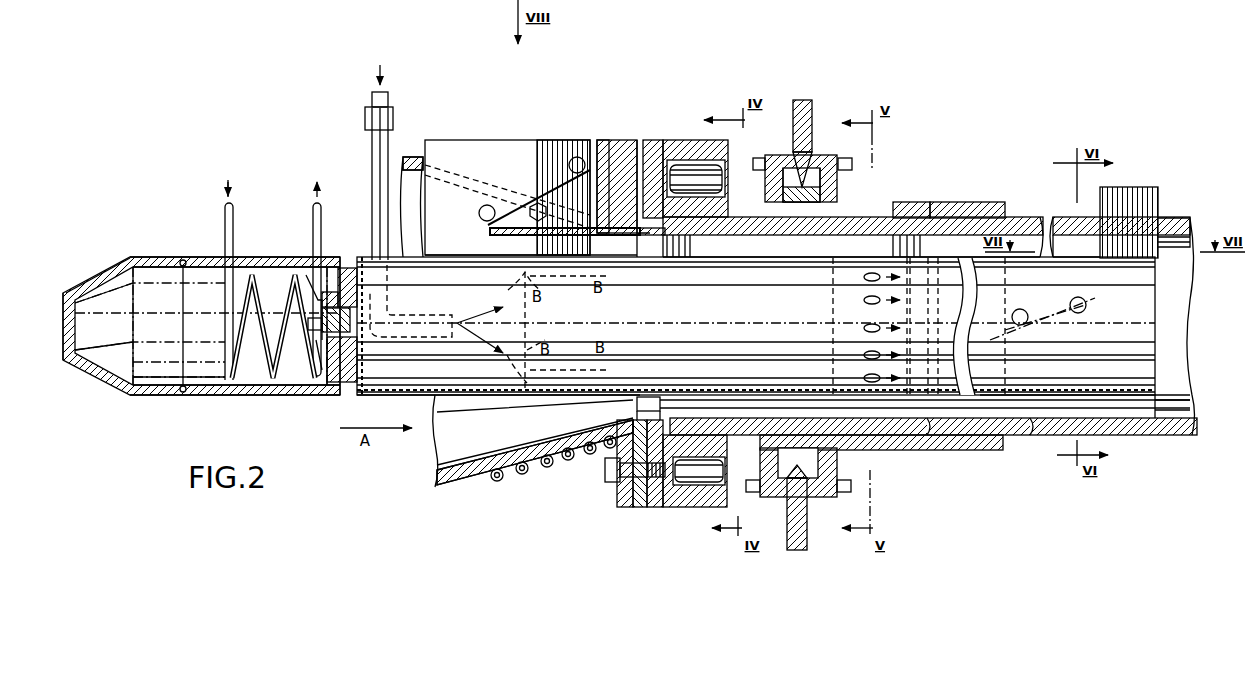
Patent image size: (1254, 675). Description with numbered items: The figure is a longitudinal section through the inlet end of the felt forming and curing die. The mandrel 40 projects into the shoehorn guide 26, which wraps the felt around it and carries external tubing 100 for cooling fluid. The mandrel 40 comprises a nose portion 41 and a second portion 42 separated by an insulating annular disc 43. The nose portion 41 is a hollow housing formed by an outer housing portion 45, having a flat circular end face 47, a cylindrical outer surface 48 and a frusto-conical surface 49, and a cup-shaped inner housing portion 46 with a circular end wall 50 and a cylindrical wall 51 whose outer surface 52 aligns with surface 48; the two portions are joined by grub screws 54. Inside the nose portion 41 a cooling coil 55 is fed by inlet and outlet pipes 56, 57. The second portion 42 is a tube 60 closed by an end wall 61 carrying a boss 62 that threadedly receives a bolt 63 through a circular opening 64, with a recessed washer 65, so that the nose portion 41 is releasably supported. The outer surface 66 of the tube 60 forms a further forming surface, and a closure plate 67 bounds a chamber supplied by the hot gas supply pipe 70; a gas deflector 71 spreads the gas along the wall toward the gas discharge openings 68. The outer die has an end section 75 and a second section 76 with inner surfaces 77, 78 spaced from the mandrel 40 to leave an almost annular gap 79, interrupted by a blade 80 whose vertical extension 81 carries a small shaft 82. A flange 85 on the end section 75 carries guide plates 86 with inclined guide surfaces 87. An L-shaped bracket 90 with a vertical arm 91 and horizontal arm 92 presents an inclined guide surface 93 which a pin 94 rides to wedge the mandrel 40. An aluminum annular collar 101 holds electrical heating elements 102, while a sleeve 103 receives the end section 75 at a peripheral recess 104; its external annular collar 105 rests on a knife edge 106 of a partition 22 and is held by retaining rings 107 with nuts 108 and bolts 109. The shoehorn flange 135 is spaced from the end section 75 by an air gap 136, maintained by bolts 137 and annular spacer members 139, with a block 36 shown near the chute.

The partition 22 is at (812, 118).
The shoehorn guide 26 is at (408, 160).
The block 36 is at (648, 405).
The mandrel 40 is at (312, 410).
The nose portion 41 is at (222, 400).
The second portion 42 is at (425, 401).
The annular disc 43 is at (346, 266).
The outer end housing portion 45 is at (151, 340).
The inner housing portion 46 is at (201, 340).
The flat circular end face 47 is at (65, 330).
The cylindrical peripheral outer surface 48 is at (140, 257).
The frusto-conical surface 49 is at (105, 276).
The circular end wall 50 is at (345, 396).
The cylindrical wall 51 is at (270, 394).
The cylindrical outer peripheral surface 52 is at (265, 258).
The grub screws 54 is at (185, 261).
The cooling coil 55 is at (226, 298).
The inlet pipe 56 is at (234, 225).
The outlet pipe 57 is at (322, 226).
The cylindrical wall 60 is at (756, 326).
The end wall 61 is at (388, 316).
The boss 62 is at (350, 330).
The bolt 63 is at (312, 331).
The circular opening 64 is at (320, 300).
The recessed washer 65 is at (315, 360).
The outer cylindrical surface 66 is at (423, 250).
The circular closure plate 67 is at (908, 305).
The gas discharge openings 68 is at (864, 328).
The hot gas supply pipe 70 is at (389, 196).
The cylindrical gas deflector 71 is at (490, 328).
The end section 75 is at (770, 236).
The second section 76 is at (1033, 222).
The cylindrical inner surface 77 is at (815, 236).
The cylindrical inner surface 78 is at (1065, 236).
The almost annular gap 79 is at (1153, 405).
The blade 80 is at (851, 246).
The vertical extension 81 is at (507, 197).
The small shaft 82 is at (584, 171).
The flange 85 is at (652, 145).
The guide plates 86 is at (564, 202).
The inclined guide surface 87 is at (494, 205).
The L-shaped bracket 90 is at (1160, 194).
The vertical arm 91 is at (1128, 222).
The horizontal arm 92 is at (1052, 308).
The inclined guide surface 93 is at (1011, 318).
The pin 94 is at (1087, 306).
The external tubing 100 is at (548, 470).
The annular collar 101 is at (672, 145).
The electrical heating elements 102 is at (695, 165).
The cylindrical sleeve 103 is at (950, 205).
The peripheral recess 104 is at (905, 210).
The external annular collar 105 is at (784, 195).
The knife edge 106 is at (822, 181).
The retaining rings 107 is at (766, 176).
The nuts 108 is at (845, 157).
The bolts 109 is at (758, 158).
The flange 135 is at (603, 145).
The air gap 136 is at (625, 148).
The bolt 137 is at (618, 495).
The annular spacer member 139 is at (640, 483).